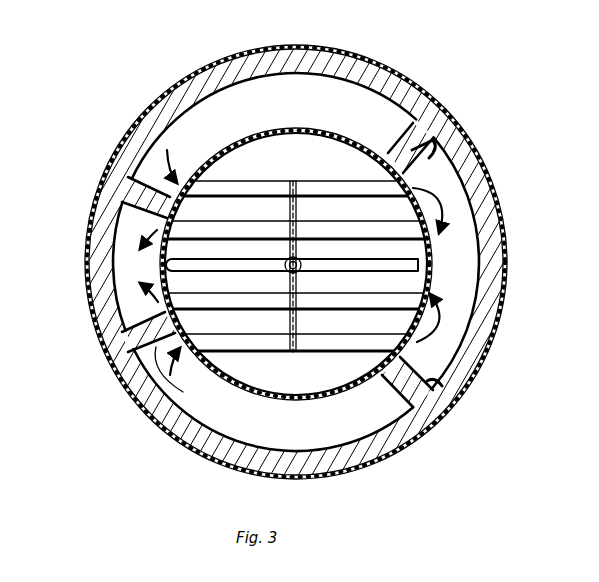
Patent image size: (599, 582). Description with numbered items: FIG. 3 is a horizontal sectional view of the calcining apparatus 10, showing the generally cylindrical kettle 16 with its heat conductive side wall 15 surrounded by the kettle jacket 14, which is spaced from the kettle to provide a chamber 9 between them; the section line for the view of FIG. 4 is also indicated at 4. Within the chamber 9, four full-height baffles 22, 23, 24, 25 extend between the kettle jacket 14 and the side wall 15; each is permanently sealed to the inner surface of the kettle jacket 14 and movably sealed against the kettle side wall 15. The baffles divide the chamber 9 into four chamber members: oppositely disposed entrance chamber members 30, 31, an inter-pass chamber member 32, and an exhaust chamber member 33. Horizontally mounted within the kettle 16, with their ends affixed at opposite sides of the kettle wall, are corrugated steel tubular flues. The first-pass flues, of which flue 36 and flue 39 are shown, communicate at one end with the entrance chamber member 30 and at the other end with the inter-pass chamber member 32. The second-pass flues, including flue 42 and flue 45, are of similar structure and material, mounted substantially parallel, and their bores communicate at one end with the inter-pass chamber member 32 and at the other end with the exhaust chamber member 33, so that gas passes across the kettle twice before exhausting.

The calcining apparatus 10 is at (405, 57).
The chamber 9 is at (390, 116).
The entrance chamber member 30 is at (330, 96).
The kettle 16 is at (226, 134).
The baffle 22 is at (147, 186).
The baffle 23 is at (440, 142).
The inter-pass chamber member 32 is at (461, 249).
The exhaust chamber member 33 is at (118, 274).
The first-pass flue 36 is at (273, 190).
The second-pass flue 42 is at (257, 234).
The second-pass flue 45 is at (242, 305).
The first-pass flue 39 is at (270, 345).
The side wall 15 is at (430, 276).
The kettle jacket 14 is at (490, 336).
The baffle 24 is at (456, 384).
The baffle 25 is at (140, 378).
The entrance chamber member 31 is at (384, 411).
The section line 4- 4 is at (66, 262).